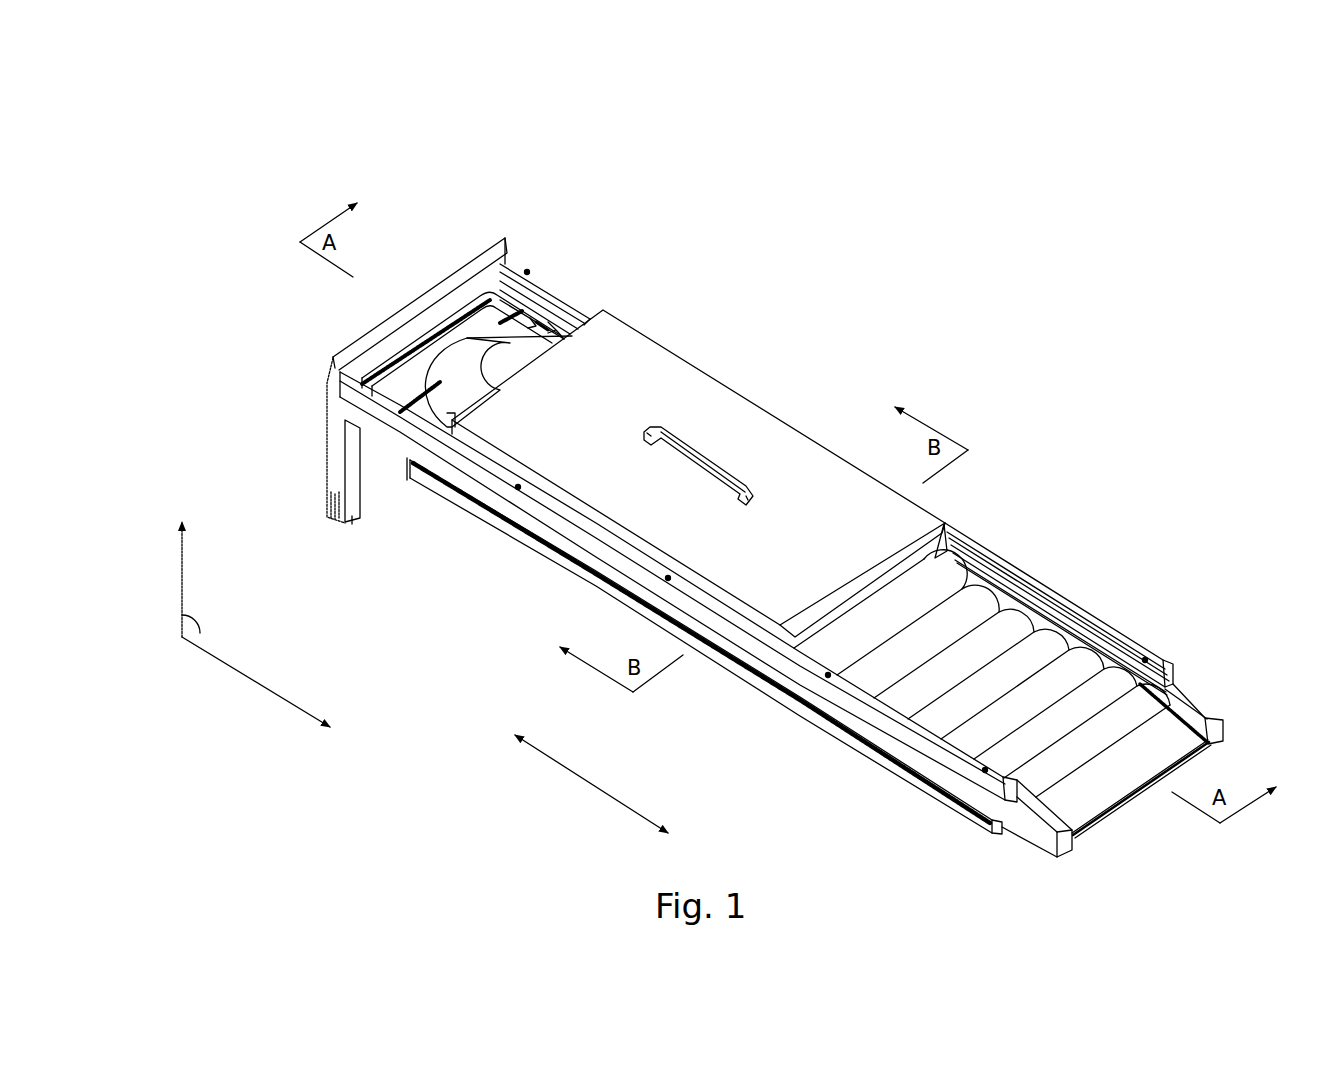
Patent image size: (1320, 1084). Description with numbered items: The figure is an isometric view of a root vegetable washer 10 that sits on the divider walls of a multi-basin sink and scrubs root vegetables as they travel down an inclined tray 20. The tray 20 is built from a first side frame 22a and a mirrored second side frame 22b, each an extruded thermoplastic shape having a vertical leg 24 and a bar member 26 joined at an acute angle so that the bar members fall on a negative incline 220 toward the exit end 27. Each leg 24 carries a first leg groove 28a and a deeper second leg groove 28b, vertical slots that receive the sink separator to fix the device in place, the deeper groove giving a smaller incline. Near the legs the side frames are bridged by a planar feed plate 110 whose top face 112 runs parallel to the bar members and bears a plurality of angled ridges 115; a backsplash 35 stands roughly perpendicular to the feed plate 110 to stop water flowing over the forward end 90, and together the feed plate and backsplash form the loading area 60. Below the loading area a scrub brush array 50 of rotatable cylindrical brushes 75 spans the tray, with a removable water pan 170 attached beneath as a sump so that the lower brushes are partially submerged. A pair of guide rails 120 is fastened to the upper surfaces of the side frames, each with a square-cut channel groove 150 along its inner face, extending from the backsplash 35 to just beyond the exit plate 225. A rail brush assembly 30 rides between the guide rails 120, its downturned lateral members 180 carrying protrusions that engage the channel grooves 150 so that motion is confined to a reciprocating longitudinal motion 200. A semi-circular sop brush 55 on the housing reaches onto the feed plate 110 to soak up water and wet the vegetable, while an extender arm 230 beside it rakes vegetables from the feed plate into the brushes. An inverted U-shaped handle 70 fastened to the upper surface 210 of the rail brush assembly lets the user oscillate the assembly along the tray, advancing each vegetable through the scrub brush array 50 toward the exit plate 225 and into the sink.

The root vegetable washer 10 is at (177, 153).
The tray 20 is at (262, 406).
The first side frame 22a is at (1180, 700).
The second side frame 22b is at (383, 442).
The vertical leg 24 is at (333, 460).
The bar member 26 is at (980, 800).
The exit end 27 is at (1230, 722).
The first leg groove 28a is at (342, 518).
The second leg groove 28b is at (328, 504).
The rail brush assembly 30 is at (623, 338).
The backsplash 35 is at (348, 346).
The scrub brush array 50 is at (1010, 556).
The sop brush 55 is at (463, 355).
The loading area 60 is at (580, 196).
The handle 70 is at (692, 443).
The cylindrical brushes 75 is at (1003, 624).
The forward end 90 is at (425, 195).
The feed plate 110 is at (557, 327).
The top face 112 is at (540, 322).
The angled ridges 115 is at (530, 322).
The guide rails 120 is at (920, 742).
The channel groove 150 is at (1070, 628).
The water pan 170 is at (482, 508).
The lateral members 180 is at (947, 528).
The longitudinal motion 200 is at (578, 775).
The upper surface 210 is at (662, 380).
The negative incline 220 is at (200, 622).
The exit plate 225 is at (1088, 804).
The extender arm 230 is at (503, 282).